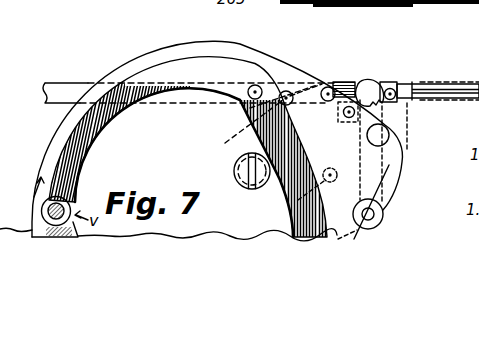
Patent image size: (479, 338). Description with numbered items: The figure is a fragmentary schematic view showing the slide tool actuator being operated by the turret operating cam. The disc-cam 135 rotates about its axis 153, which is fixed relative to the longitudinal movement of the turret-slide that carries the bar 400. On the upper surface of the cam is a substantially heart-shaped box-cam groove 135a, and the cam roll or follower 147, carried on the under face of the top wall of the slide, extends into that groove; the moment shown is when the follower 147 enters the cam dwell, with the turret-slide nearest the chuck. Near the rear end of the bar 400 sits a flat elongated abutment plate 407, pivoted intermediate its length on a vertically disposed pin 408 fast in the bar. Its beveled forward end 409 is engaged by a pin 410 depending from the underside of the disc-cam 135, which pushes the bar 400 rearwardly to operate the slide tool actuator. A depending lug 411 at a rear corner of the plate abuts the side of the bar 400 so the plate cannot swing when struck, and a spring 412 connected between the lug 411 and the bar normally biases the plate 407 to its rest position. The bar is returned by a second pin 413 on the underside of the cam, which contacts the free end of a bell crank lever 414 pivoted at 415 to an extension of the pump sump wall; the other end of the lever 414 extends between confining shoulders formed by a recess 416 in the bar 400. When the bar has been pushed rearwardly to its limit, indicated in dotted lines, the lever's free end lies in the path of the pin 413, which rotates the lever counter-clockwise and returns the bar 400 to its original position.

The bar 400 is at (67, 93).
The disc-cam 135 is at (201, 143).
The box-cam groove 135a is at (107, 140).
The cam roll or follower 147 is at (77, 195).
The axis 153 is at (241, 185).
The pin 410 is at (259, 113).
The forward end 409 is at (240, 123).
The pin 413 is at (300, 192).
The abutment plate 407 is at (338, 81).
The pin 408 is at (321, 102).
The depending lug 411 is at (349, 122).
The recess 416 is at (360, 80).
The spring 412 is at (386, 84).
The pivot 415 is at (384, 211).
The bell crank lever 414 is at (375, 230).